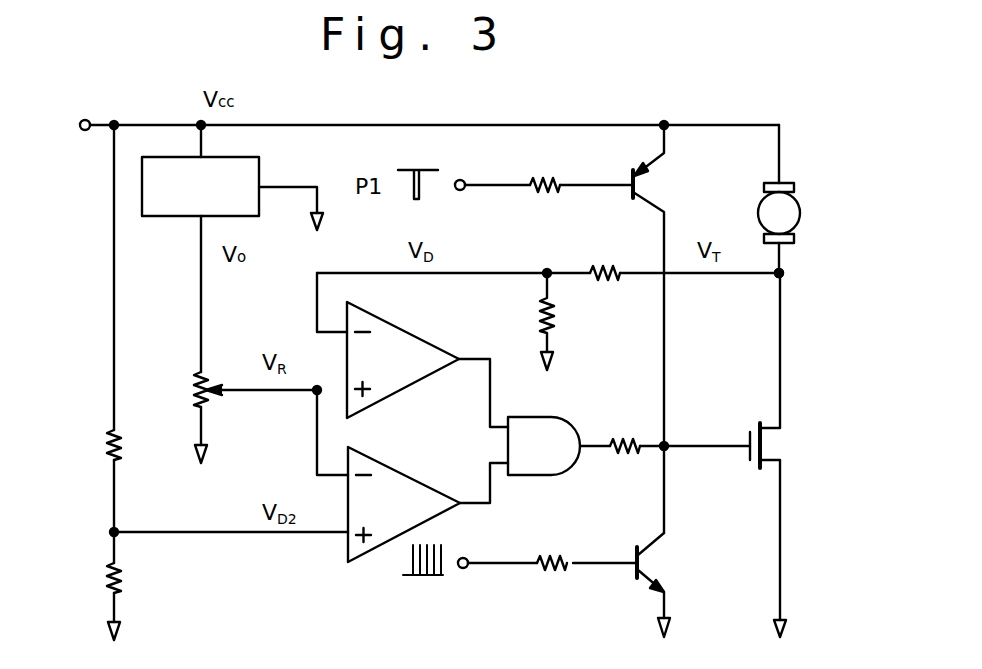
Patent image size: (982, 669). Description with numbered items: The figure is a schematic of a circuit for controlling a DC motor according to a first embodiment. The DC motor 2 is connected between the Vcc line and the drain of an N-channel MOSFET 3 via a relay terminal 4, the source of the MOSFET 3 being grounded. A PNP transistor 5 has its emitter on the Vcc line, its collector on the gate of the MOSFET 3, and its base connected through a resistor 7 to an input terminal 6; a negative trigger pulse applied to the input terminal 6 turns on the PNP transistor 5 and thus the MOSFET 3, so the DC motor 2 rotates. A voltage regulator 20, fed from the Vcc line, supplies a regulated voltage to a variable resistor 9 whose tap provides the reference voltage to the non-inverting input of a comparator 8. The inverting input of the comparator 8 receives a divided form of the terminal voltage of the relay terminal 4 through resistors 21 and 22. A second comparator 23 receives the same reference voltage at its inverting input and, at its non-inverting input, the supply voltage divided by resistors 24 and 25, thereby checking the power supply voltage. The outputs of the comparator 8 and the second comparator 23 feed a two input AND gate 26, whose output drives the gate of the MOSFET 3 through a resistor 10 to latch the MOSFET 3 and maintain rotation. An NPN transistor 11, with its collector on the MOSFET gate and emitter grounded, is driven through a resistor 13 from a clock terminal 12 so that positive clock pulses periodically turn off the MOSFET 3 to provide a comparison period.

The DC motor 2 is at (800, 215).
The N-channel MOSFET 3 is at (765, 458).
The relay terminal 4 is at (782, 277).
The PNP transistor 5 is at (667, 204).
The input terminal 6 is at (458, 180).
The resistor 7 is at (549, 178).
The comparator 8 is at (432, 341).
The variable resistor 9 is at (206, 402).
The resistor 10 is at (630, 430).
The NPN transistor 11 is at (652, 550).
The clock terminal 12 is at (461, 570).
The resistor 13 is at (550, 575).
The voltage regulator 20 is at (262, 172).
The resistor 21 is at (617, 266).
The resistor 22 is at (553, 318).
The second comparator 23 is at (440, 491).
The resistor 24 is at (120, 455).
The resistor 25 is at (120, 577).
The two input AND gate 26 is at (566, 472).